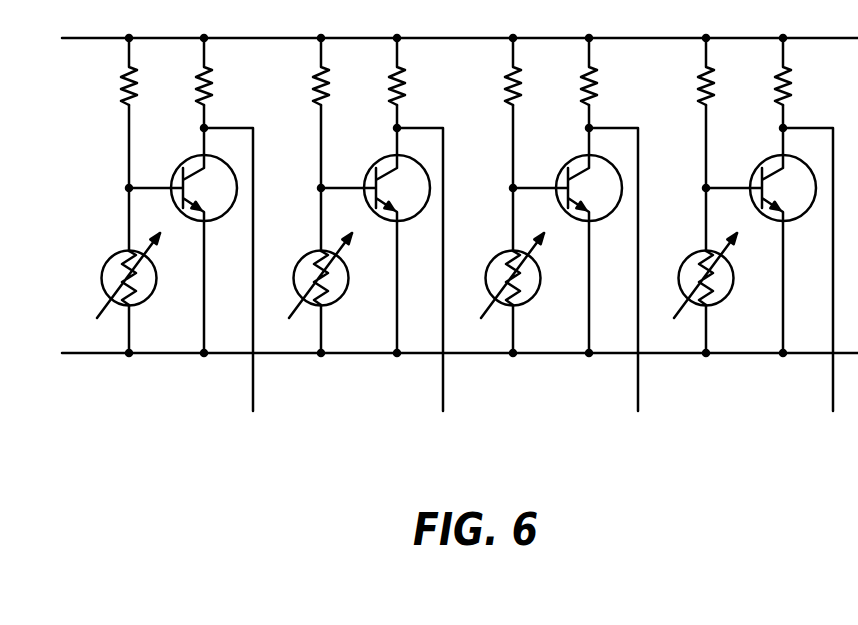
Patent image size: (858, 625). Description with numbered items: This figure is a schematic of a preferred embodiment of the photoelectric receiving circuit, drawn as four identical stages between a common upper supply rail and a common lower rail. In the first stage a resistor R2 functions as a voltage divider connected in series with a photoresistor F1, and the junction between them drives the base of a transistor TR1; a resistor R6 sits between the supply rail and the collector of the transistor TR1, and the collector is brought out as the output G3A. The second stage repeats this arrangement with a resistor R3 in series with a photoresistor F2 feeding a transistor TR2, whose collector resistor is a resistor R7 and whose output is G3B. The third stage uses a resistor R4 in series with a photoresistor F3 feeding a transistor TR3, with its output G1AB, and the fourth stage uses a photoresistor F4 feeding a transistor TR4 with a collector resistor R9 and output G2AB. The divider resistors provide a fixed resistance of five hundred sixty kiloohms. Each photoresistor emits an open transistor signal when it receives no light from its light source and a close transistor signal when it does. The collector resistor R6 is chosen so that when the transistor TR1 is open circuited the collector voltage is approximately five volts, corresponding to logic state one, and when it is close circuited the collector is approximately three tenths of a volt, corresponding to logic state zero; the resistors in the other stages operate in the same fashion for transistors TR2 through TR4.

The resistor R2 is at (116, 71).
The resistor R6 is at (192, 71).
The transistor TR1 is at (183, 229).
The photoresistor F1 is at (140, 275).
The output terminal G3A is at (237, 284).
The resistor R3 is at (308, 71).
The resistor R7 is at (385, 71).
The transistor TR2 is at (375, 229).
The photoresistor F2 is at (332, 275).
The output terminal G3B is at (429, 284).
The resistor R4 is at (500, 71).
The transistor TR3 is at (567, 229).
The photoresistor F3 is at (524, 275).
The output terminal G1AB is at (625, 284).
The resistor R9 is at (771, 71).
The transistor TR4 is at (761, 229).
The photoresistor F4 is at (717, 275).
The output terminal G2AB is at (820, 284).